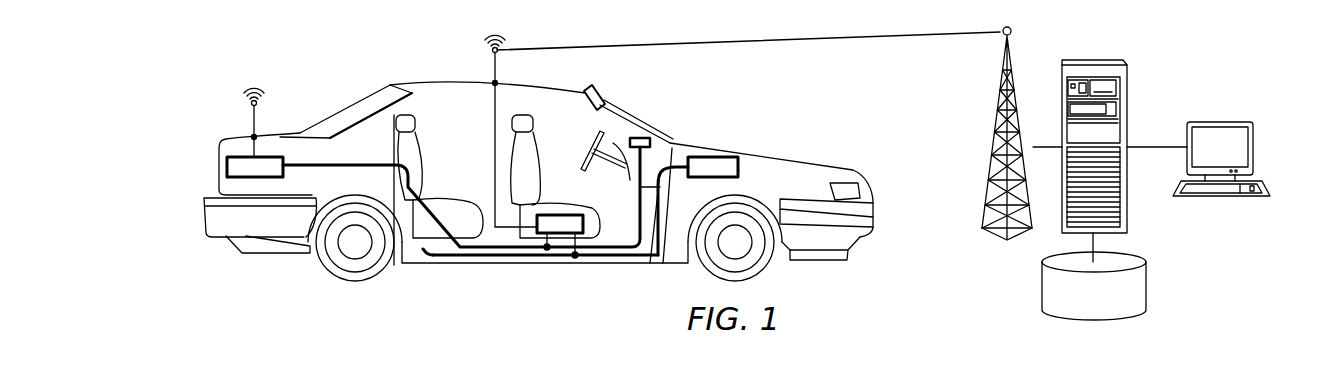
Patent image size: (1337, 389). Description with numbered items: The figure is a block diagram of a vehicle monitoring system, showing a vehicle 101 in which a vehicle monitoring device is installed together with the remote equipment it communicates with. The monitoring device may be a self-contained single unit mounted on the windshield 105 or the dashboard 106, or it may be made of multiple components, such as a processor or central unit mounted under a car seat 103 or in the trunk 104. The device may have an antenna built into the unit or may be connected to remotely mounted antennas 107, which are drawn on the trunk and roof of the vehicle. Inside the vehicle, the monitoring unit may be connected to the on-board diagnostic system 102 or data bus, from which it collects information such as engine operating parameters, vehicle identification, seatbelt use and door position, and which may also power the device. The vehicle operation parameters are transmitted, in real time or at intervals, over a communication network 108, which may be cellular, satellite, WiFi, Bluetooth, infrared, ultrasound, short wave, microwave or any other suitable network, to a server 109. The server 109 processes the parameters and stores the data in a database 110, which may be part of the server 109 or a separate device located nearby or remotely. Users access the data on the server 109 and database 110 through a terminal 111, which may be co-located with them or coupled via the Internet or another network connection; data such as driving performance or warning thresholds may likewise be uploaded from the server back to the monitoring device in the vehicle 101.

The vehicle 101 is at (830, 169).
The on-board diagnostic (OBD) system 102 is at (720, 157).
The car seat 103 is at (558, 215).
The trunk 104 is at (227, 166).
The windshield 105 is at (600, 92).
The dashboard 106 is at (644, 138).
The remotely mounted antennas 107 is at (252, 118).
The communication network 108 is at (993, 128).
The server 109 is at (1128, 97).
The database 110 is at (1147, 292).
The terminal 111 is at (1240, 122).